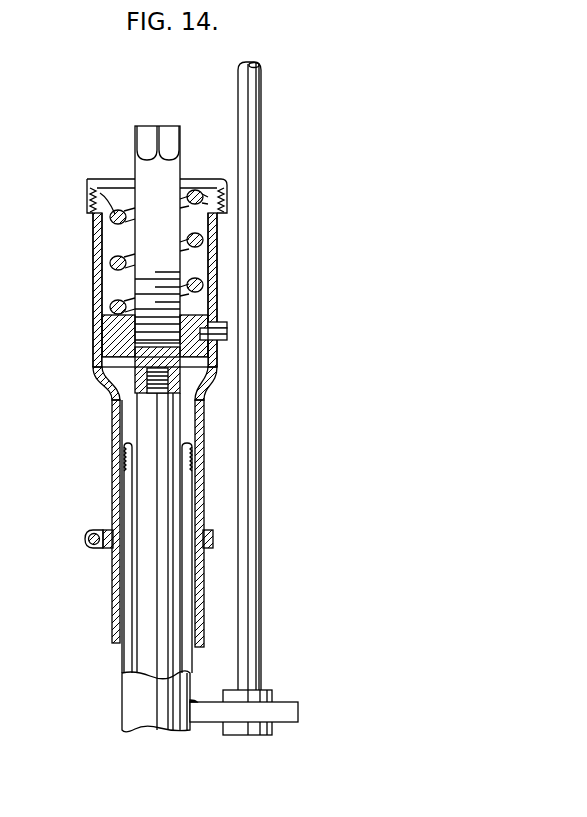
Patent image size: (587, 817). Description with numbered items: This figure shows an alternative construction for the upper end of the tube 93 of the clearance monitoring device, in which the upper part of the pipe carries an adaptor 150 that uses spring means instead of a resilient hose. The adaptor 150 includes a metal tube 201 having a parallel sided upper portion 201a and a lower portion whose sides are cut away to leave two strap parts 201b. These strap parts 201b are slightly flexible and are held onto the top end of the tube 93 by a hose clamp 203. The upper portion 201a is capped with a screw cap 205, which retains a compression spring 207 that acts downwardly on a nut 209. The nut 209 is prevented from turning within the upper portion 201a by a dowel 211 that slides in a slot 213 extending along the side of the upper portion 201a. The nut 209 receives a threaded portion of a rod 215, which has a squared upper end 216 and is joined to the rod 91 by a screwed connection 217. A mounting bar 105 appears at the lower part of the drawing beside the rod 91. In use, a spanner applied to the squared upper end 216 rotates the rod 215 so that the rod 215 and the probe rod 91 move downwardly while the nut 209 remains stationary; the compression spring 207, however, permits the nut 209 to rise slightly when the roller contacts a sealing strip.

The squared upper end 216 is at (160, 118).
The rod 215 is at (146, 178).
The screw cap 205 is at (187, 184).
The compression spring 207 is at (93, 200).
The nut 209 is at (110, 318).
The parallel sided upper portion 201a is at (100, 335).
The adaptor 150 is at (90, 392).
The metal tube 201 is at (105, 431).
The strap parts 201b is at (118, 478).
The hose clamp 203 is at (88, 538).
The tube 93 is at (128, 659).
The rod 91 is at (150, 670).
The bracket bar 105 is at (287, 713).
The slot 213 is at (217, 322).
The dowel 211 is at (228, 333).
The screwed connection 217 is at (168, 388).